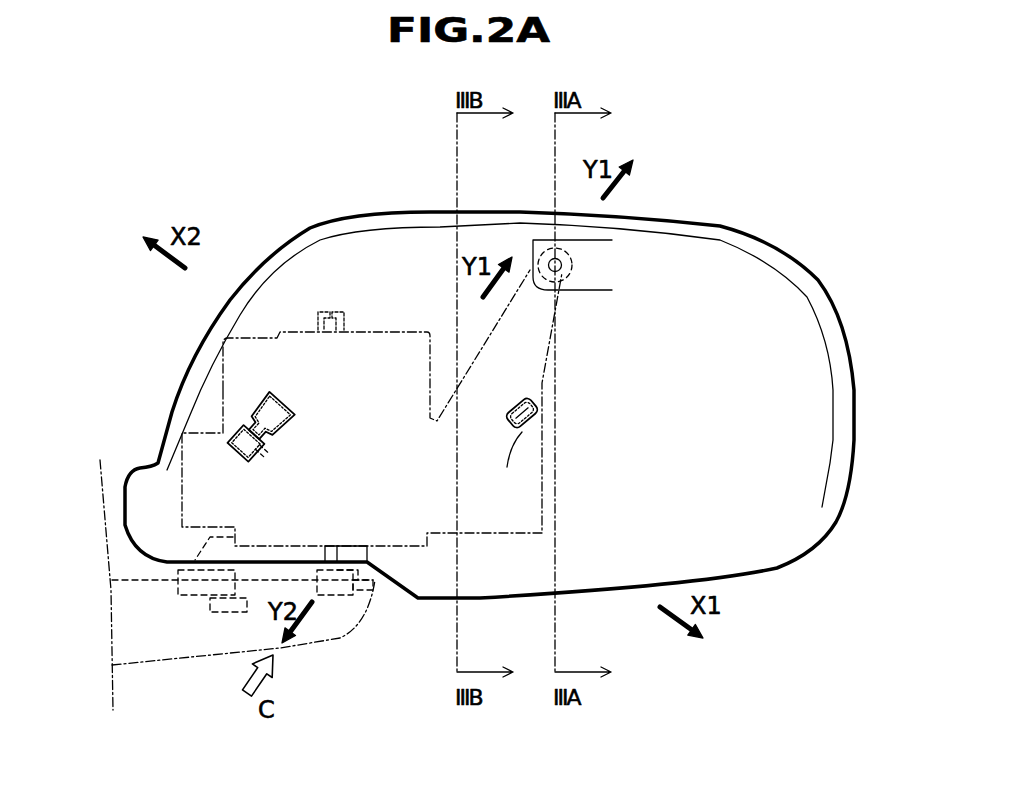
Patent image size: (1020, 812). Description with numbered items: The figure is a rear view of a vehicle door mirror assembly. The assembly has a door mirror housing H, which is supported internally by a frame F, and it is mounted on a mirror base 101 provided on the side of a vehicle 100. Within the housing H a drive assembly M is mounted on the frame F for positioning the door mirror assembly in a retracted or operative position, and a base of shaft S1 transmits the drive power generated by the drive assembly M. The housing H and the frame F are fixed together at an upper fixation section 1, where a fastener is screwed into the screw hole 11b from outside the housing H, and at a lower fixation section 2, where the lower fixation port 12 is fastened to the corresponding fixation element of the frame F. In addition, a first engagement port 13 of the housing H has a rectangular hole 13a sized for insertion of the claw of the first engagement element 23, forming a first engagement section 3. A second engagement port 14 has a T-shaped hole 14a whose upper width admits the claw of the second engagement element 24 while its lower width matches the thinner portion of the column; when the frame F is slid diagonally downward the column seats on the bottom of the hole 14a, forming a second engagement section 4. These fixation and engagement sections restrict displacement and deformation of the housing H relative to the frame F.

The upper fixation section 1 is at (540, 235).
The lower fixation section 2 is at (362, 597).
The first engagement section 3 is at (557, 408).
The second engagement section 4 is at (229, 416).
The screw hole 11b is at (562, 267).
The lower fixation port 12 is at (367, 550).
The first engagement port 13 is at (506, 383).
The hole 13a is at (496, 462).
The second engagement port 14 is at (287, 400).
The hole 14a is at (253, 430).
The first engagement element 23 is at (530, 437).
The second engagement element 24 is at (231, 458).
The vehicle 100 is at (110, 625).
The mirror base 101 is at (178, 662).
The drive assembly M is at (380, 350).
The frame F is at (570, 342).
The door mirror housing H is at (760, 585).
The base of shaft S1 is at (337, 595).